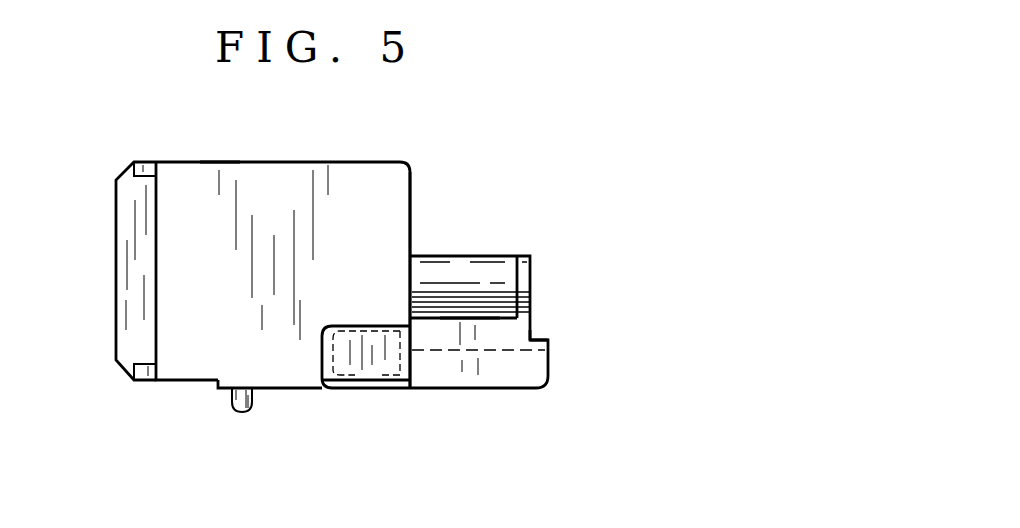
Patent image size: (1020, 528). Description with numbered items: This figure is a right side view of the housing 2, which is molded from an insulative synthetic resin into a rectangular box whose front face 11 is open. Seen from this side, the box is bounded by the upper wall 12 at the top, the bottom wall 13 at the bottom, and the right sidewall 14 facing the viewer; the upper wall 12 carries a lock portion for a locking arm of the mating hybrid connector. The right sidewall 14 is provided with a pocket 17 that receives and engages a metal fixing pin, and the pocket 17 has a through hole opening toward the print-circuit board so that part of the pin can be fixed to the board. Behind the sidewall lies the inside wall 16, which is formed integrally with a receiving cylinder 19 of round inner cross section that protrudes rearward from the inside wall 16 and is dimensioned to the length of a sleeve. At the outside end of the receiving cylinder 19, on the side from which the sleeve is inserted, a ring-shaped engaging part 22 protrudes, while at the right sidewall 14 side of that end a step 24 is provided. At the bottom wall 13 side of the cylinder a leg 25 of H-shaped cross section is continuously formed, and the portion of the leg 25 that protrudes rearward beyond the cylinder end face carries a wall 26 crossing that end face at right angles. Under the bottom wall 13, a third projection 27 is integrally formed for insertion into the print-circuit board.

The housing 2 is at (336, 162).
The front face 11 is at (152, 322).
The upper wall 12 is at (216, 162).
The bottom wall 13 is at (185, 383).
The right sidewall 14 is at (370, 203).
The inside wall 16 is at (413, 220).
The pocket 17 is at (385, 360).
The receiving cylinder 19 is at (488, 268).
The engaging part 22 is at (527, 277).
The step 24 is at (470, 320).
The leg 25 is at (538, 368).
The wall 26 is at (540, 335).
The third projection 27 is at (250, 410).